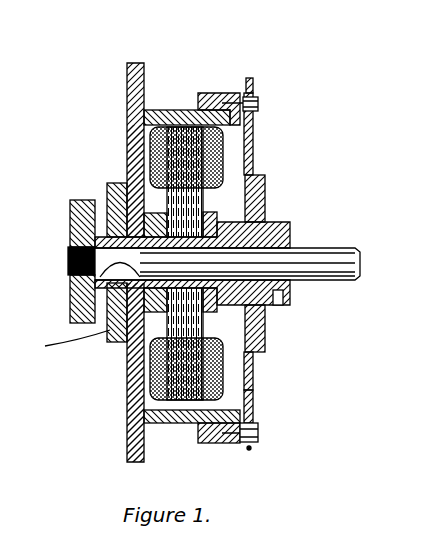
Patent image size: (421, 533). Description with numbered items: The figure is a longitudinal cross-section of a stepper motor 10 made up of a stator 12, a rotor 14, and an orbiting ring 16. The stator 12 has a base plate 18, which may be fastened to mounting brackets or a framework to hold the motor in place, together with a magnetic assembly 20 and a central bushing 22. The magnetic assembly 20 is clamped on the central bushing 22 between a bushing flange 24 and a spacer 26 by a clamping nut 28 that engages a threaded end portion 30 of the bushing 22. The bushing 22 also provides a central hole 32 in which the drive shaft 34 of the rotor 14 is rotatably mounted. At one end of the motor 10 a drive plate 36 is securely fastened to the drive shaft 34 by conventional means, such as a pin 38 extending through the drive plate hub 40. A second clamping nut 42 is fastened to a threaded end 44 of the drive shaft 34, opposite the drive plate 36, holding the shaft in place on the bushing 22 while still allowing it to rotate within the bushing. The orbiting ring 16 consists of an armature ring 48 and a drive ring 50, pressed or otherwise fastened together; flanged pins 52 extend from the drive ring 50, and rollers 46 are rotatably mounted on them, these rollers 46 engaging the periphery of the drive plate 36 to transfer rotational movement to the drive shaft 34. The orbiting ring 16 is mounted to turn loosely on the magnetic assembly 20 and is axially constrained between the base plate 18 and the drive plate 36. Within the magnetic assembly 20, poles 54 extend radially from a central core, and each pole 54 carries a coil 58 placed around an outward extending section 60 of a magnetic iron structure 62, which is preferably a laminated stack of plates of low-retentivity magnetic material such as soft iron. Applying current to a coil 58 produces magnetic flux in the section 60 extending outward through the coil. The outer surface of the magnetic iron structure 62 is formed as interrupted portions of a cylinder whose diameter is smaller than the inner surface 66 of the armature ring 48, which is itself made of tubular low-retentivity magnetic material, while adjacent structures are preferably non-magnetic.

The stepper motor 10 is at (320, 433).
The stator 12 is at (127, 141).
The rotor 14 is at (265, 222).
The orbiting ring 16 is at (160, 425).
The base plate 18 is at (127, 103).
The magnetic assembly 20 is at (223, 158).
The central bushing 22 is at (66, 346).
The bushing flange 24 is at (255, 340).
The spacer 26 is at (122, 335).
The clamping nut 28 is at (108, 186).
The threaded end portion 30 is at (72, 312).
The central hole 32 is at (100, 277).
The drive shaft 34 is at (340, 245).
The drive plate 36 is at (253, 395).
The pin 38 is at (283, 300).
The drive plate hub 40 is at (265, 325).
The second clamping nut 42 is at (72, 224).
The threaded end 44 is at (68, 256).
The rollers 46 is at (253, 90).
The armature ring 48 is at (160, 110).
The drive ring 50 is at (210, 93).
The flanged pins 52 is at (262, 105).
The poles 54 is at (215, 443).
The coil 58 is at (150, 380).
The outward extending section 60 is at (188, 127).
The magnetic iron structure 62 is at (252, 450).
The inner surface 66 is at (140, 412).